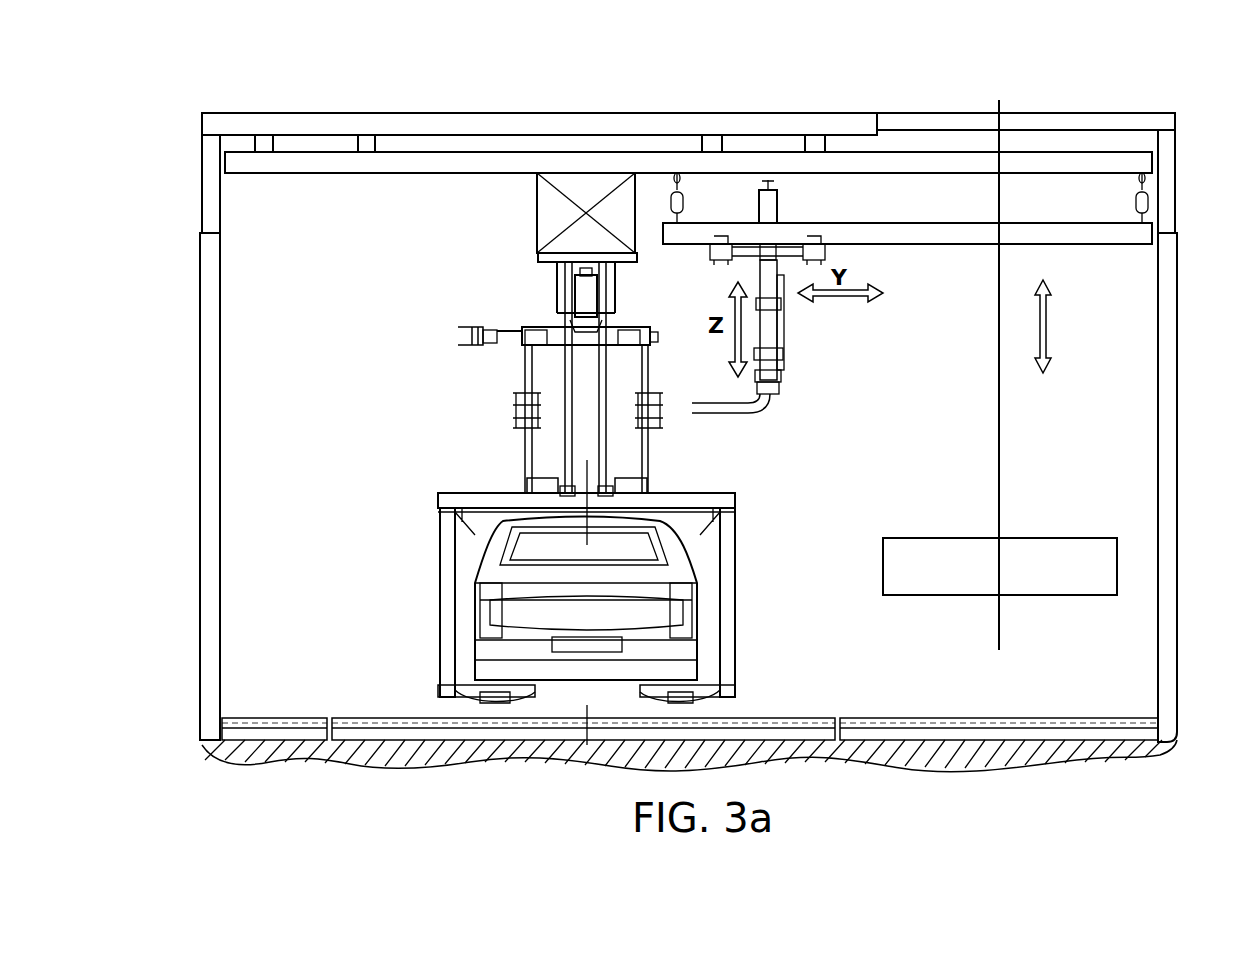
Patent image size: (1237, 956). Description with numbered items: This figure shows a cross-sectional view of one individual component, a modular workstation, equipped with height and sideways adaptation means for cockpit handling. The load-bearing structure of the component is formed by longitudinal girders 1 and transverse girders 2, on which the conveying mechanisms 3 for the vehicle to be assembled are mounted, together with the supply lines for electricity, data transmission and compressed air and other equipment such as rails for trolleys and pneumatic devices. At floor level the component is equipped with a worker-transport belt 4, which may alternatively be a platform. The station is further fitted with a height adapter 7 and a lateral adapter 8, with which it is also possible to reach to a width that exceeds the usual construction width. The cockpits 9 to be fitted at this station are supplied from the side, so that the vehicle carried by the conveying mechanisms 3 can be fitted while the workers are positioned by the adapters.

The longitudinal girders 1 is at (375, 135).
The transverse girders 2 is at (585, 115).
The conveying mechanisms 3 is at (618, 300).
The worker-transport belt 4 is at (445, 748).
The height adapter 7 is at (1172, 138).
The lateral adapter 8 is at (1112, 113).
The cockpits 9 is at (1045, 548).